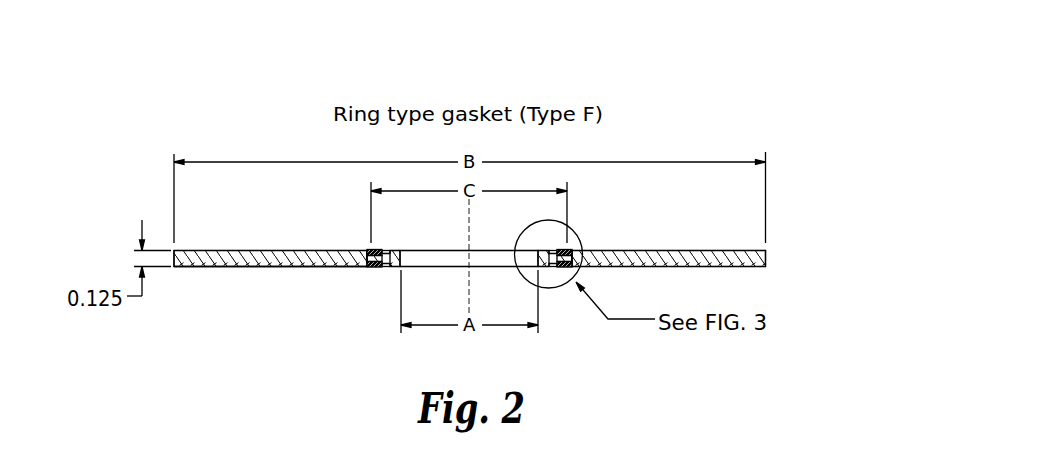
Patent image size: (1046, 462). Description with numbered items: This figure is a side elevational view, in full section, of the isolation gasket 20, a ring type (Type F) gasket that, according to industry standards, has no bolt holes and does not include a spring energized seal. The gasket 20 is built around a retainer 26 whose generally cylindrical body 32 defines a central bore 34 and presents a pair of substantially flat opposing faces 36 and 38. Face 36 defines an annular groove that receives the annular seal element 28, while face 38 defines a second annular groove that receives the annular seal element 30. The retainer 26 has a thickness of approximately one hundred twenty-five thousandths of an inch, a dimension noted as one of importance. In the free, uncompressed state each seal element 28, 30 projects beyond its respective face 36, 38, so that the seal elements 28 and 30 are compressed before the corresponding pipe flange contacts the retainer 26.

The isolation gasket 20 is at (684, 205).
The retainer 26 is at (719, 250).
The seal element 28 is at (562, 250).
The seal element 30 is at (563, 267).
The cylindrical body 32 is at (209, 266).
The central bore 34 is at (447, 250).
The face 36 is at (228, 250).
The face 38 is at (275, 266).